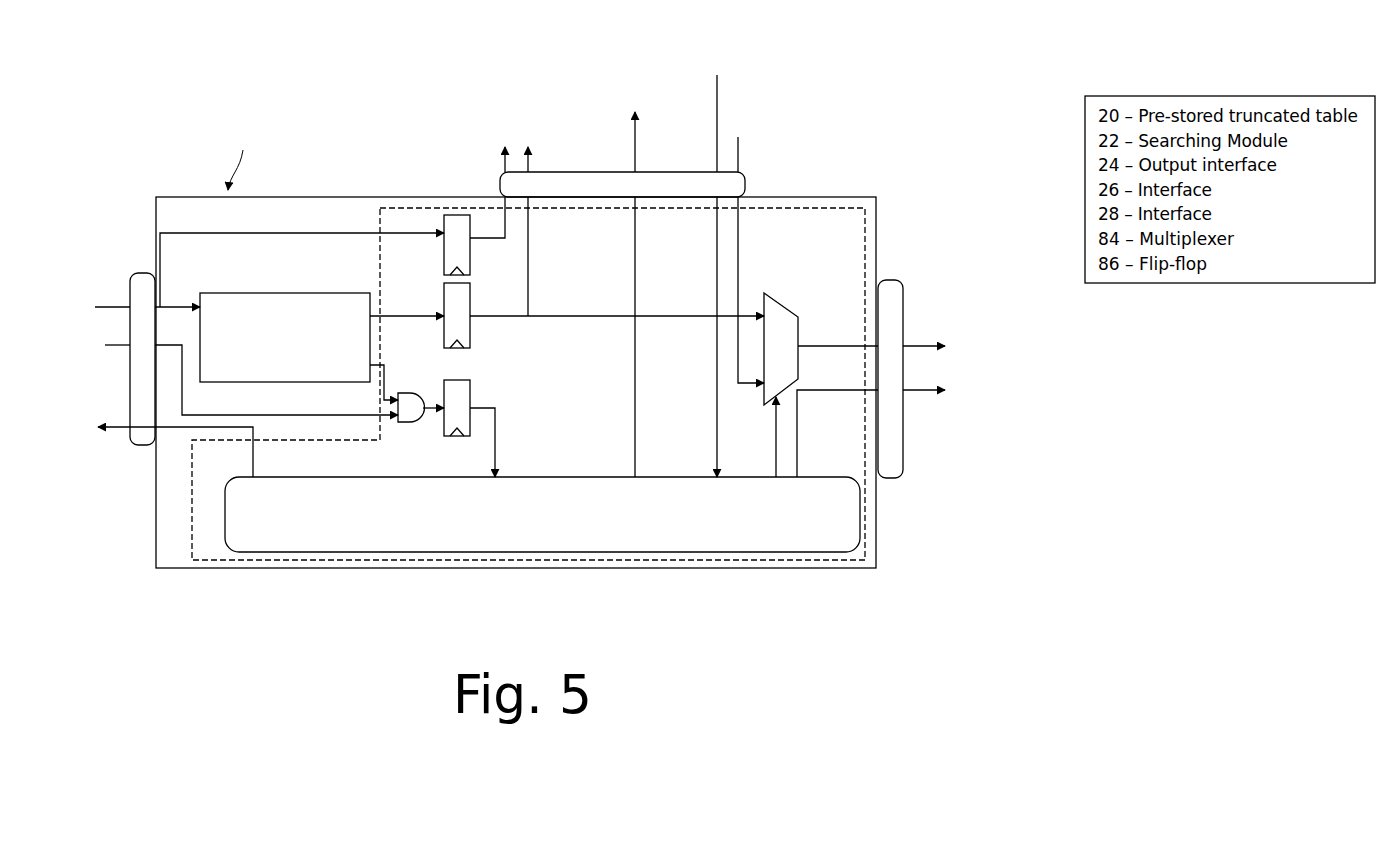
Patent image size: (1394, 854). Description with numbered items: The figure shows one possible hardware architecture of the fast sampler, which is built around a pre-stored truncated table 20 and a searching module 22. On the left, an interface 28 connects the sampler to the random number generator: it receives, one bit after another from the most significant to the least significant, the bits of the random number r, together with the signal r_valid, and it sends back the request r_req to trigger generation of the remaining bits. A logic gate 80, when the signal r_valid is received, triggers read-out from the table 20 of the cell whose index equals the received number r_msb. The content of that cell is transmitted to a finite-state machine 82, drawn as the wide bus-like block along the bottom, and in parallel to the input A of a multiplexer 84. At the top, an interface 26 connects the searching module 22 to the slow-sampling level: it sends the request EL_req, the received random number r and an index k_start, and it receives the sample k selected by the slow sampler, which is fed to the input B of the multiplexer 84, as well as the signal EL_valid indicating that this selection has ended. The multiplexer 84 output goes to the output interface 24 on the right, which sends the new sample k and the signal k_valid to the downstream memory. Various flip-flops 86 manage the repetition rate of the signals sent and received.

The pre-stored truncated table 20 is at (285, 315).
The searching module 22 is at (703, 572).
The output interface 24 is at (890, 278).
The interface 26 is at (748, 186).
The interface 28 is at (145, 272).
The logic gate 80 is at (405, 425).
The finite-state machine 82 is at (462, 540).
The multiplexer 84 is at (795, 330).
The flip-flops 86 is at (462, 262).